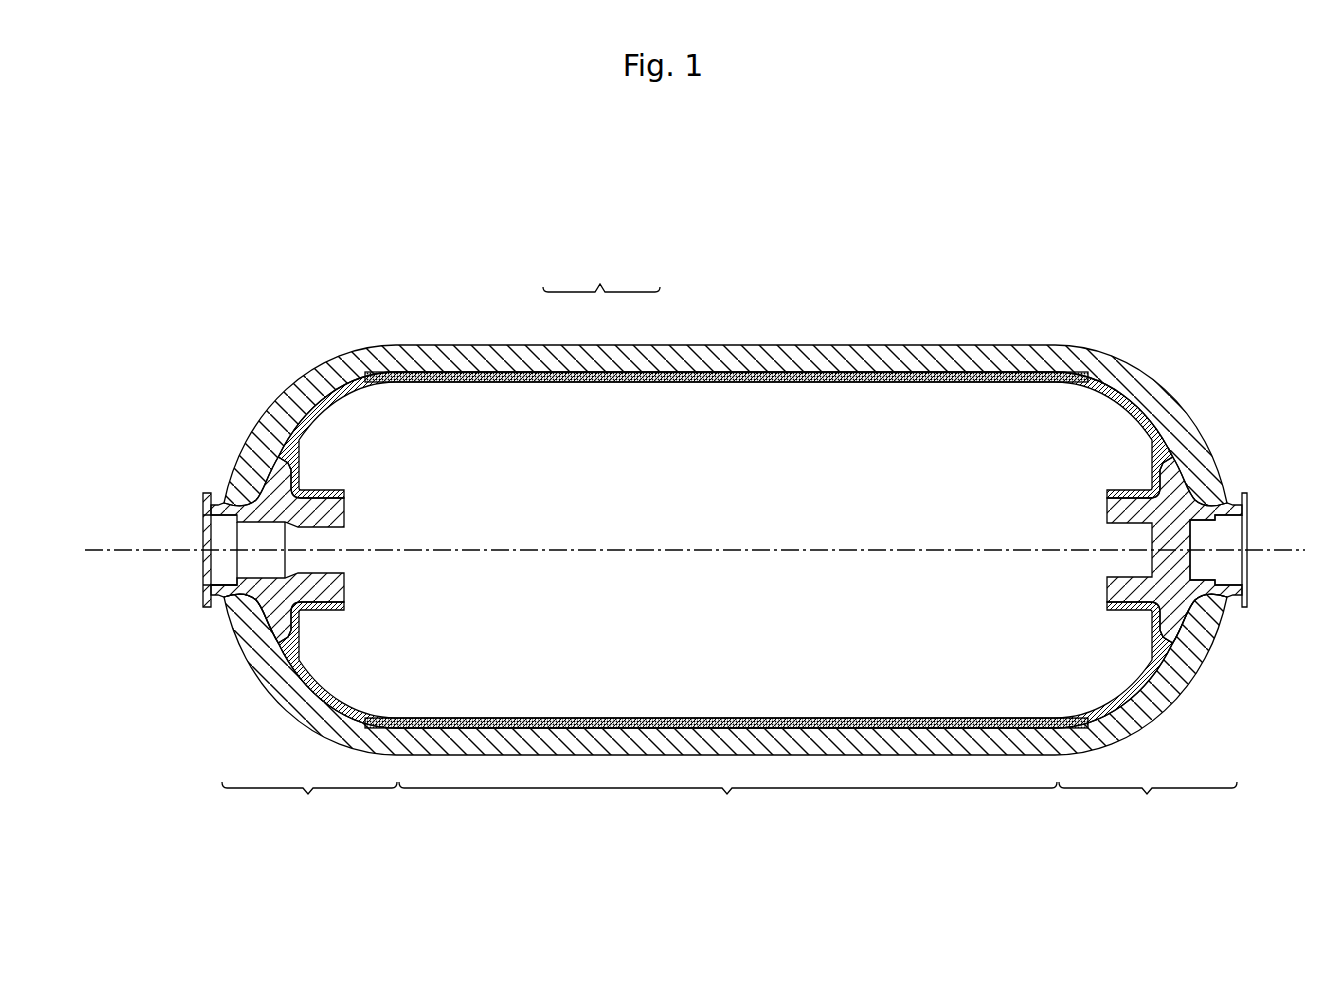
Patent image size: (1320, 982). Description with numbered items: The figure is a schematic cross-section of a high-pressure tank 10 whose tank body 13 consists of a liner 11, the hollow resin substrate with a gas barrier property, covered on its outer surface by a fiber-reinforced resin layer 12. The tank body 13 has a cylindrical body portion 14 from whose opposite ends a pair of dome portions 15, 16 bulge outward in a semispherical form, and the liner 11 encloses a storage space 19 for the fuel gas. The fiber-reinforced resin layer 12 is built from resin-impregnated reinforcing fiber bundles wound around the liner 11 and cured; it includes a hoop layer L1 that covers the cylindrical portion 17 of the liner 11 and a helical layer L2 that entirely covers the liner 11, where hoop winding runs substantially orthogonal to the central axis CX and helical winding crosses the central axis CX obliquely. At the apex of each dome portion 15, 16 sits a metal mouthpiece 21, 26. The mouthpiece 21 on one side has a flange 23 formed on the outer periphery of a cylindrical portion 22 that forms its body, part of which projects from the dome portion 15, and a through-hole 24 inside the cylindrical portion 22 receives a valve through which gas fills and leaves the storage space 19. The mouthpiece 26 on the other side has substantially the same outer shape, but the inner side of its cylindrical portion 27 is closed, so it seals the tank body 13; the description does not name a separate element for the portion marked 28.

The high-pressure tank 10 is at (262, 300).
The liner 11 is at (632, 387).
The fiber-reinforced resin layer 12 is at (565, 365).
The tank body 13 is at (725, 503).
The cylindrical body portion 14 is at (728, 803).
The dome portion 15 is at (309, 803).
The dome portion 16 is at (1148, 803).
The cylindrical portion 17 is at (750, 393).
The storage space 19 is at (806, 638).
The mouthpiece 21 is at (277, 595).
The cylindrical portion 22 is at (216, 593).
The flange 23 is at (278, 627).
The through-hole 24 is at (230, 587).
The mouthpiece 26 is at (1172, 602).
The cylindrical portion 27 is at (1234, 602).
The second boss engagement portion 28 is at (1175, 630).
The hoop layer L1 is at (878, 363).
The helical layer L2 is at (806, 362).
The central axis CX is at (1302, 545).